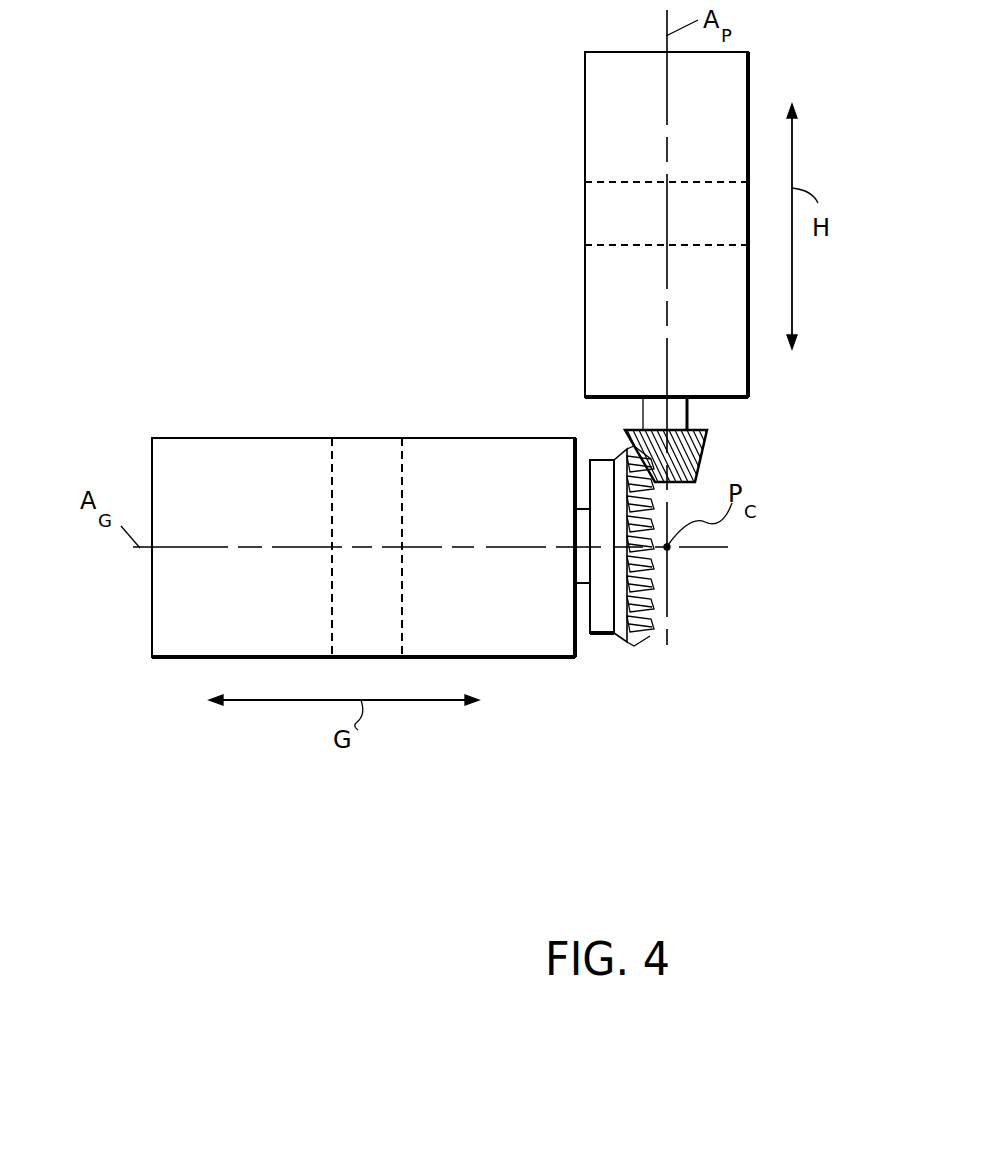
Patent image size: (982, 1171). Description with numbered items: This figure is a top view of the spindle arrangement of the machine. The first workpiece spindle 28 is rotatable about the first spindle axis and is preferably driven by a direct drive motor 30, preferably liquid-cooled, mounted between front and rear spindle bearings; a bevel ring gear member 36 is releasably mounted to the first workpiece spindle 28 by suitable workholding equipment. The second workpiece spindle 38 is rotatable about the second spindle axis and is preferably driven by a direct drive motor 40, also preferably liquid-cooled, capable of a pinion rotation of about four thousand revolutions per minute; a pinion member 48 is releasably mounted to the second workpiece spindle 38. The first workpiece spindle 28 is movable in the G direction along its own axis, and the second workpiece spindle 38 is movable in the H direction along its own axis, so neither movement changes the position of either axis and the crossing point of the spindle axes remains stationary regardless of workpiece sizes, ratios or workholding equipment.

The first workpiece spindle 28 is at (205, 453).
The direct drive motor 30 is at (372, 455).
The bevel ring gear member 36 is at (630, 640).
The second workpiece spindle 38 is at (612, 113).
The direct drive motor 40 is at (627, 219).
The pinion member 48 is at (700, 451).